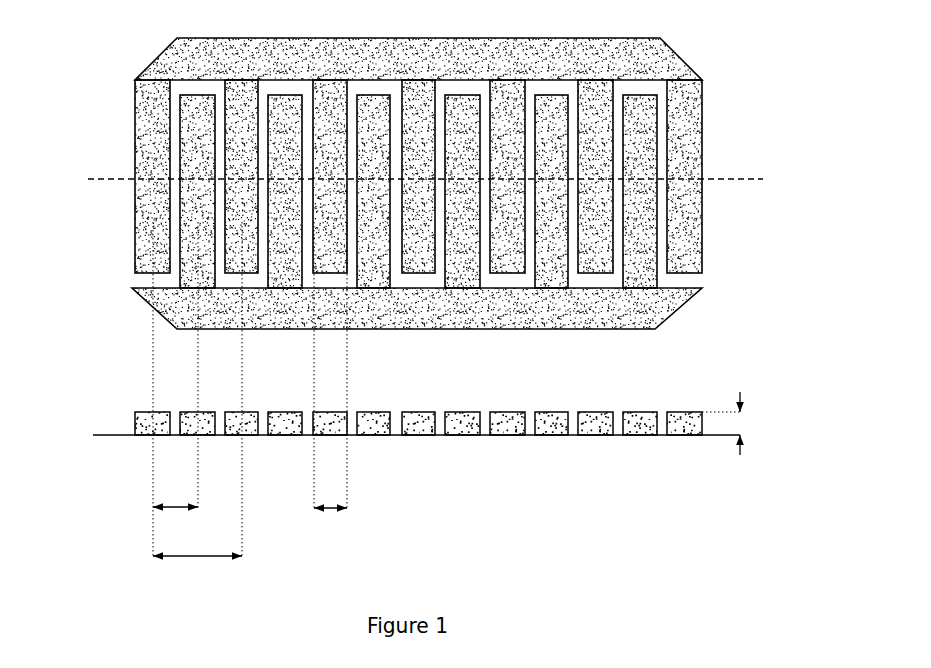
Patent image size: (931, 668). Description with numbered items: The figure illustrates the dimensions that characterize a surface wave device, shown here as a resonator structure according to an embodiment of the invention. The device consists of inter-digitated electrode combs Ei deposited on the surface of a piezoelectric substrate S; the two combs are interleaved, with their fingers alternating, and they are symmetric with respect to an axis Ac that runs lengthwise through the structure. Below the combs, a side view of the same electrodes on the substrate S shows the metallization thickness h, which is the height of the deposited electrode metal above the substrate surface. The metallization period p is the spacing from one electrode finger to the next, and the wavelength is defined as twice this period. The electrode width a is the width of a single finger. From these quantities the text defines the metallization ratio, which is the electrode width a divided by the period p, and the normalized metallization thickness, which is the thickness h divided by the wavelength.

The piezoelectric substrate S is at (110, 275).
The inter-digitated electrode combs Ei is at (657, 405).
The axis Ac is at (461, 179).
The metallization thickness h is at (739, 423).
The metallization period p is at (175, 389).
The electrode width a is at (330, 379).